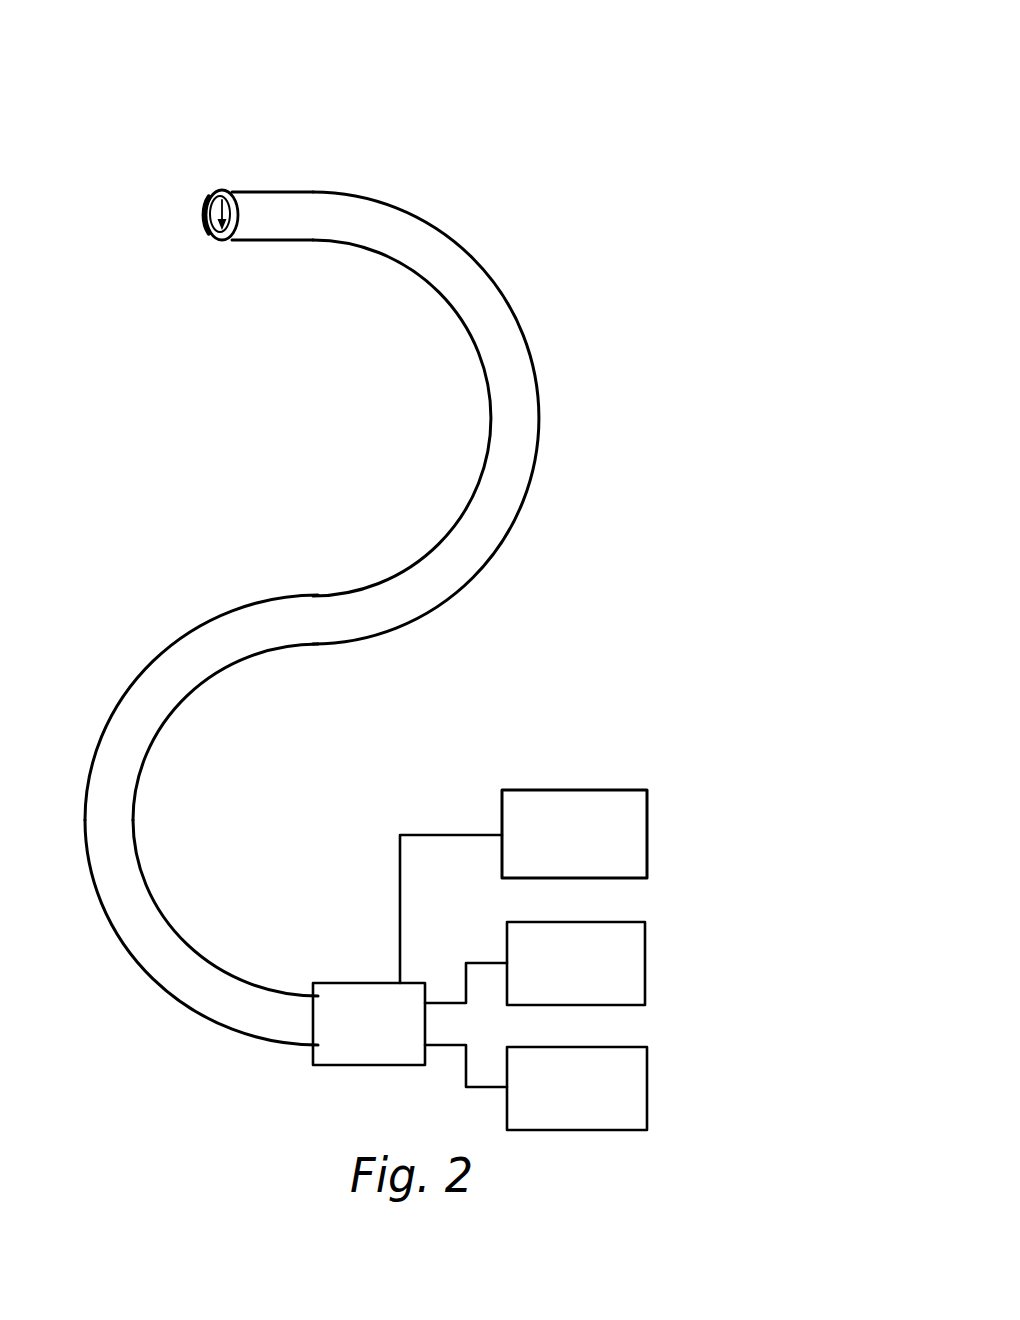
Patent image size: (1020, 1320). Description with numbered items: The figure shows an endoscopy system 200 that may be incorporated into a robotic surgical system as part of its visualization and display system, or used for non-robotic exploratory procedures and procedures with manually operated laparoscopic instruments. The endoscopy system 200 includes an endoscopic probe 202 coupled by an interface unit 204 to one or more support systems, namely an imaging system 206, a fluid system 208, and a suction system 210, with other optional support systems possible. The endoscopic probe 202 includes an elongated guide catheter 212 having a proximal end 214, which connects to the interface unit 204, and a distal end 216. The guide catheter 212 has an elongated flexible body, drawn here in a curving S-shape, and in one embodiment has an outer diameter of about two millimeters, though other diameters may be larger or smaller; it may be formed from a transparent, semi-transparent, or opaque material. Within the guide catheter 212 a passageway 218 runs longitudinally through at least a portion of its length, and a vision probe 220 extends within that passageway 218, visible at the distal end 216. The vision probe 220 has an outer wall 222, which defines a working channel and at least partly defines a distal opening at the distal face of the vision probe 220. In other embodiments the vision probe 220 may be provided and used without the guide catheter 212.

The endoscopy system 200 is at (576, 92).
The endoscopic probe 202 is at (537, 528).
The interface unit 204 is at (395, 1044).
The imaging system 206 is at (647, 963).
The fluid system 208 is at (650, 1087).
The suction system 210 is at (650, 832).
The guide catheter 212 is at (197, 623).
The proximal end 214 is at (280, 955).
The distal end 216 is at (334, 167).
The passageway 218 is at (210, 200).
The vision probe 220 is at (212, 232).
The outer wall 222 is at (203, 213).